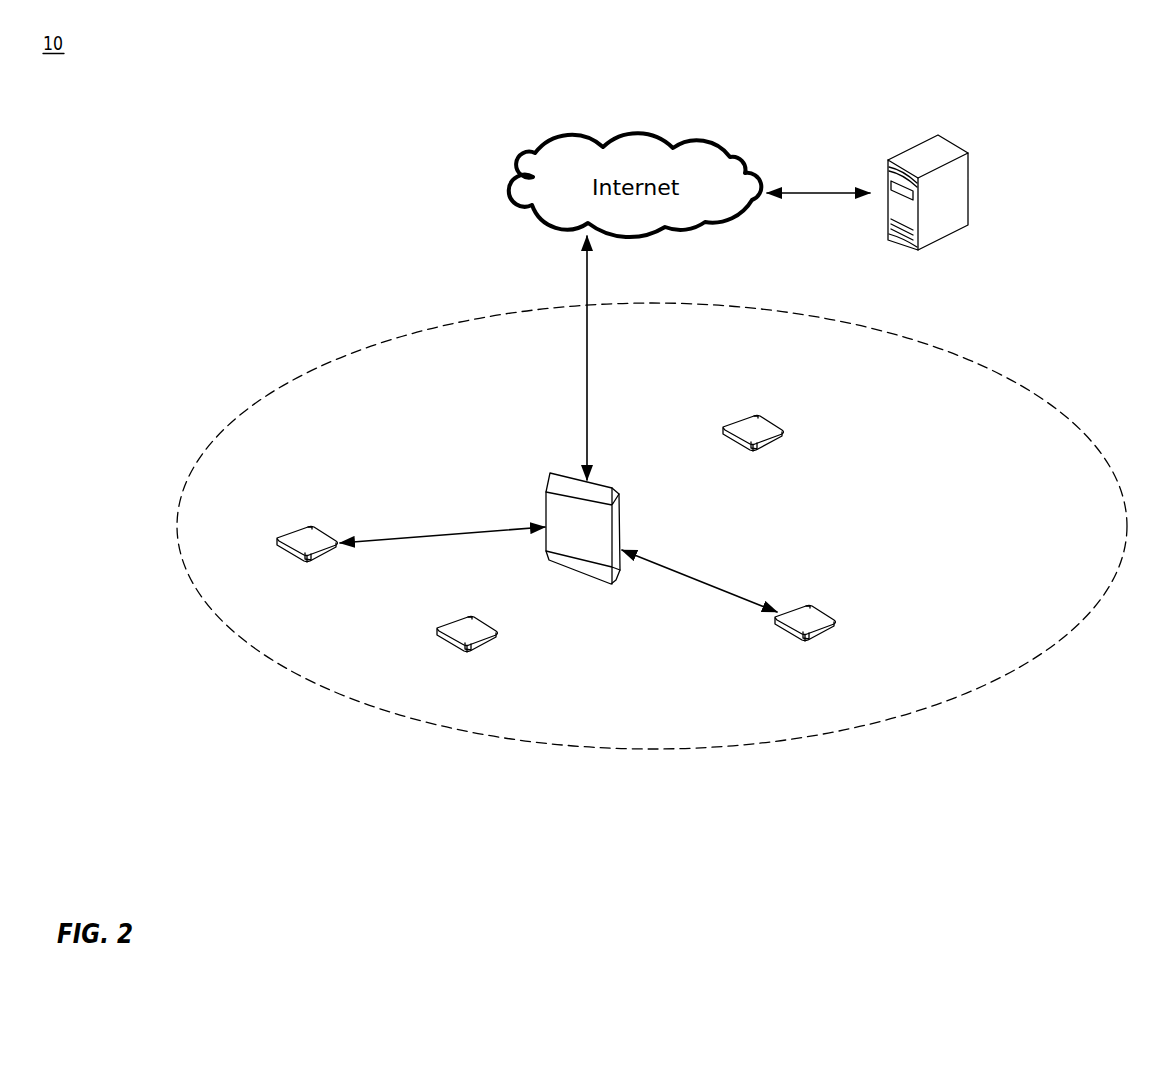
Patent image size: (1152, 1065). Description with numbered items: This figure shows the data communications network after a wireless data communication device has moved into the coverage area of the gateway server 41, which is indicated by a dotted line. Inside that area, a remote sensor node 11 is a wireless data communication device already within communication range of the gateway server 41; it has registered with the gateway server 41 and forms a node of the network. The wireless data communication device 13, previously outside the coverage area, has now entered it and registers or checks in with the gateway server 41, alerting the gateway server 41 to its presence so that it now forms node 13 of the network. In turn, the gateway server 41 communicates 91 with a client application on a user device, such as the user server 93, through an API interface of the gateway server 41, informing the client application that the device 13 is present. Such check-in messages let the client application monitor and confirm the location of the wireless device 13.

The remote sensor node 11 is at (313, 528).
The wireless data communication device 13 is at (810, 610).
The gateway server 41 is at (608, 485).
The communication 91 is at (803, 192).
The user server 93 is at (652, 526).